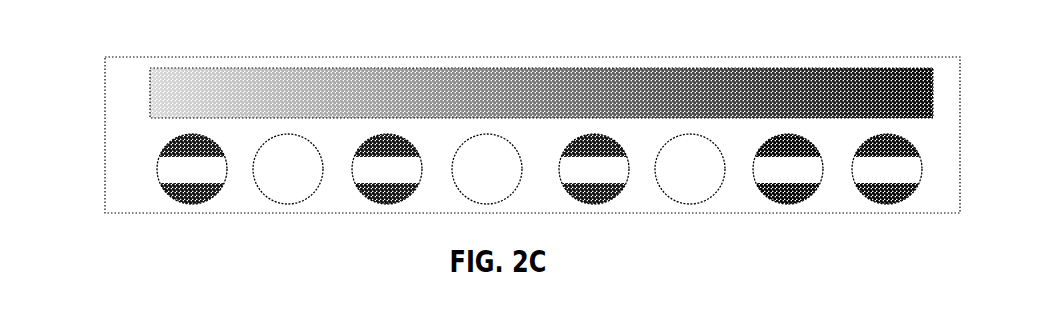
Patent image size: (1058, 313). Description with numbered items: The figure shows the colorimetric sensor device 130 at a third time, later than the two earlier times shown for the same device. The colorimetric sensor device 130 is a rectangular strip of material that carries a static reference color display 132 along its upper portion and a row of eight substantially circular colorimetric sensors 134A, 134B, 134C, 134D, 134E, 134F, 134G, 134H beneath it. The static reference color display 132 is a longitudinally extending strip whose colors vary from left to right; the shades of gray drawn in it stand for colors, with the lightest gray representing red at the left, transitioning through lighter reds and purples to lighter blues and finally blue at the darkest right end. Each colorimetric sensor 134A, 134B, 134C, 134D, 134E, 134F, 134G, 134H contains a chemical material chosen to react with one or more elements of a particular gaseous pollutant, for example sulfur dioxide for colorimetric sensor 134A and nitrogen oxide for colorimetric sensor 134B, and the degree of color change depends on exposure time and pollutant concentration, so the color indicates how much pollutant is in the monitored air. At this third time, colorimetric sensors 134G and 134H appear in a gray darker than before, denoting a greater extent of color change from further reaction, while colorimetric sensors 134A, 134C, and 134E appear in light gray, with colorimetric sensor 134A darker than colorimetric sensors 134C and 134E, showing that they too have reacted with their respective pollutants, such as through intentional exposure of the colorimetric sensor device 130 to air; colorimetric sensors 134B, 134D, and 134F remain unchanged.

The colorimetric sensor device 130 is at (70, 135).
The static reference color display 132 is at (493, 67).
The colorimetric sensor 134A is at (167, 180).
The colorimetric sensor 134B is at (263, 180).
The colorimetric sensor 134C is at (362, 180).
The colorimetric sensor 134D is at (462, 180).
The colorimetric sensor 134E is at (569, 180).
The colorimetric sensor 134F is at (665, 180).
The colorimetric sensor 134G is at (763, 180).
The colorimetric sensor 134H is at (862, 180).